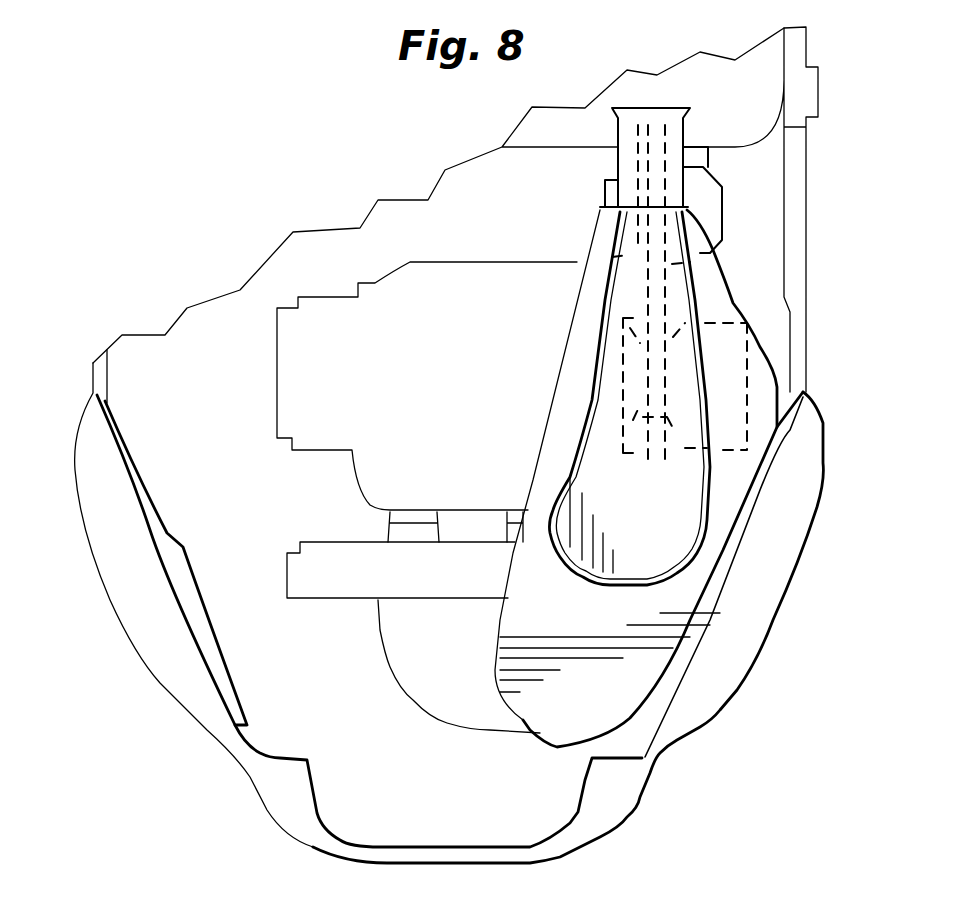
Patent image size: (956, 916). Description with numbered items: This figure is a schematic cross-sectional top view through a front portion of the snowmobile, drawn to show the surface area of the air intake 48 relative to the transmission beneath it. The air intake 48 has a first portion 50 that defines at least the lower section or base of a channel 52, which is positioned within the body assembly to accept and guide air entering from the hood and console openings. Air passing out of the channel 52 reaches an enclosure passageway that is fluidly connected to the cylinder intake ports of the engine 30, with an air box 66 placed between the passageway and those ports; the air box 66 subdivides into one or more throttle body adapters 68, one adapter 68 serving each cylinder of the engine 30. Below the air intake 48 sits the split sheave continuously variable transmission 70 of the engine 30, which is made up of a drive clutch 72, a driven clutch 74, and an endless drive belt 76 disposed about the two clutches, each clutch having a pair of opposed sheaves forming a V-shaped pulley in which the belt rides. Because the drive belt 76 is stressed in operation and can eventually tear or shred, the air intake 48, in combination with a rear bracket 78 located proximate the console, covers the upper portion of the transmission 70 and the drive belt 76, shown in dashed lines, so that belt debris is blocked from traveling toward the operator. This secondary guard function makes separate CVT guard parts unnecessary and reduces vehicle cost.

The engine 30 is at (283, 370).
The air intake 48 is at (778, 427).
The first portion 50 is at (623, 553).
The channel 52 is at (675, 520).
The air box 66 is at (502, 733).
The throttle body adapter 68 is at (513, 527).
The split sheave continuously variable transmission 70 is at (868, 130).
The drive clutch 72 is at (748, 360).
The driven clutch 74 is at (727, 205).
The drive belt 76 is at (660, 320).
The rear bracket 78 is at (700, 127).